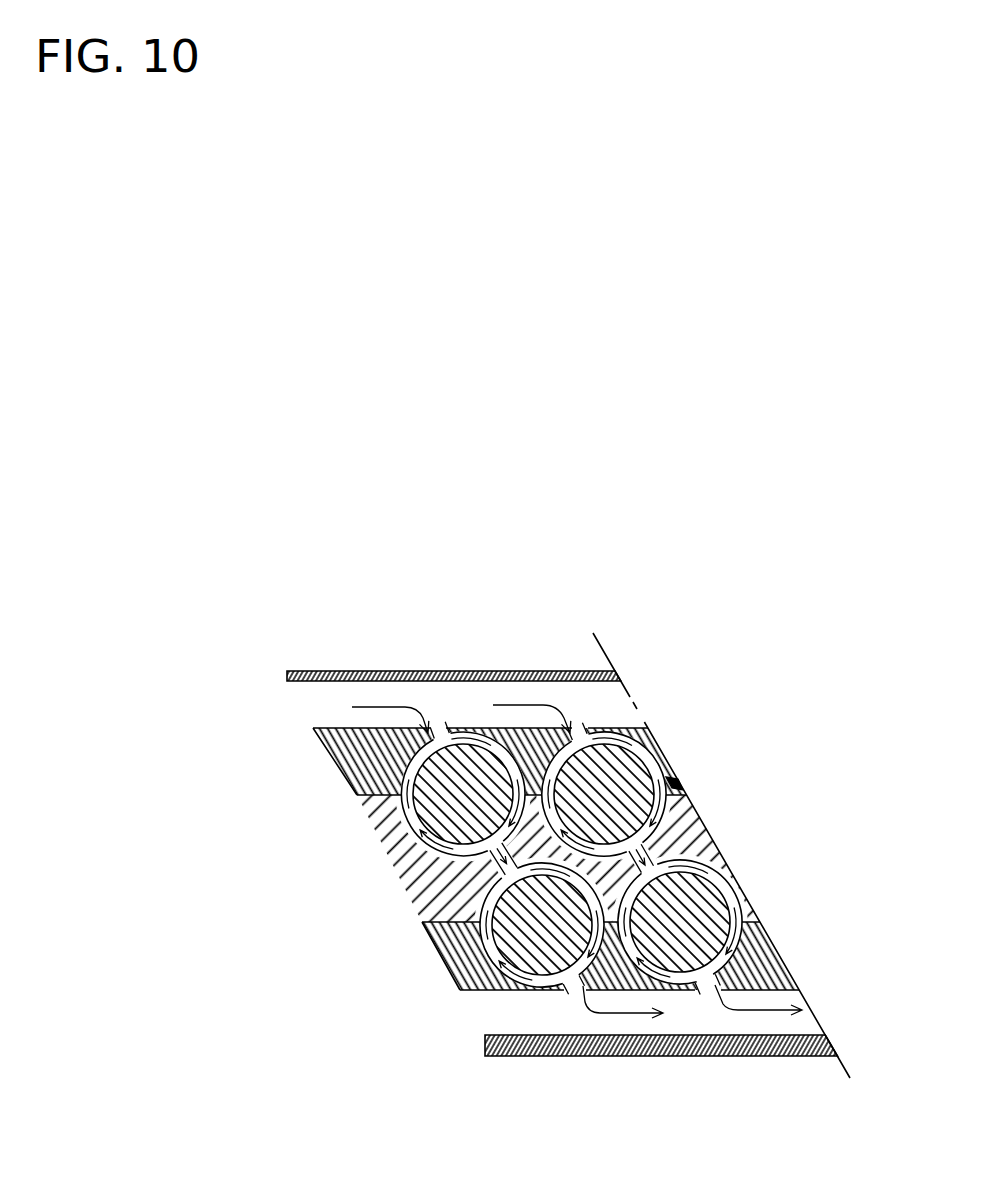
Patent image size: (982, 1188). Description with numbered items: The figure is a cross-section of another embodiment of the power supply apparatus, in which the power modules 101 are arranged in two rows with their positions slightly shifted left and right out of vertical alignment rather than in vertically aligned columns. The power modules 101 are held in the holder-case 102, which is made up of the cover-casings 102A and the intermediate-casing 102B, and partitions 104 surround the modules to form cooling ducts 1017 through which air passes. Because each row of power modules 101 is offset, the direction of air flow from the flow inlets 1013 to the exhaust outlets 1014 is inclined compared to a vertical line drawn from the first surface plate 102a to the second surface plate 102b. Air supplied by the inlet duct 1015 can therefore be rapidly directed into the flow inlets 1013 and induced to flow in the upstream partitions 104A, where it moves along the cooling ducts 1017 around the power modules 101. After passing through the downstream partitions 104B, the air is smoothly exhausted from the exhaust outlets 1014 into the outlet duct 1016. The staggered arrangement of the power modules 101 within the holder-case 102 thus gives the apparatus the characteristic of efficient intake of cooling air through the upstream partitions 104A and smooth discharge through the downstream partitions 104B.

The power module 101 is at (457, 765).
The holder-case 102 is at (505, 855).
The cover-casing 102A is at (448, 993).
The intermediate-casing 102B is at (505, 858).
The first surface plate 102a is at (515, 715).
The second surface plate 102b is at (677, 1006).
The partition 104 is at (712, 806).
The upstream partition 104A is at (674, 778).
The downstream partition 104B is at (746, 870).
The flow inlet 1013 is at (430, 712).
The exhaust outlet 1014 is at (571, 1005).
The inlet duct 1015 is at (290, 700).
The outlet duct 1016 is at (466, 1020).
The cooling duct 1017 is at (640, 760).